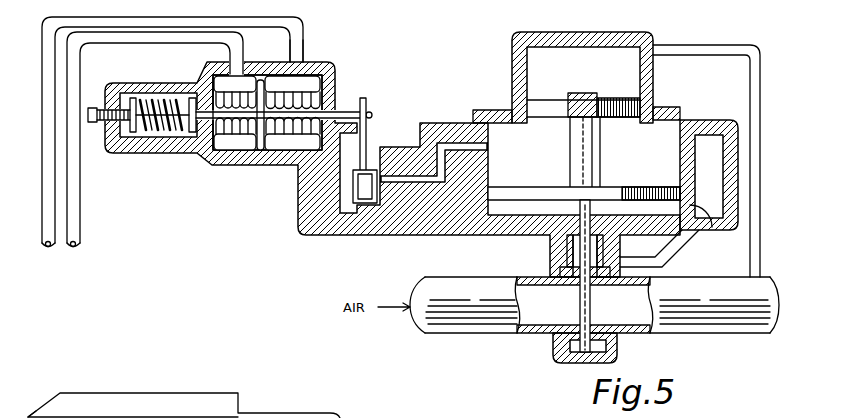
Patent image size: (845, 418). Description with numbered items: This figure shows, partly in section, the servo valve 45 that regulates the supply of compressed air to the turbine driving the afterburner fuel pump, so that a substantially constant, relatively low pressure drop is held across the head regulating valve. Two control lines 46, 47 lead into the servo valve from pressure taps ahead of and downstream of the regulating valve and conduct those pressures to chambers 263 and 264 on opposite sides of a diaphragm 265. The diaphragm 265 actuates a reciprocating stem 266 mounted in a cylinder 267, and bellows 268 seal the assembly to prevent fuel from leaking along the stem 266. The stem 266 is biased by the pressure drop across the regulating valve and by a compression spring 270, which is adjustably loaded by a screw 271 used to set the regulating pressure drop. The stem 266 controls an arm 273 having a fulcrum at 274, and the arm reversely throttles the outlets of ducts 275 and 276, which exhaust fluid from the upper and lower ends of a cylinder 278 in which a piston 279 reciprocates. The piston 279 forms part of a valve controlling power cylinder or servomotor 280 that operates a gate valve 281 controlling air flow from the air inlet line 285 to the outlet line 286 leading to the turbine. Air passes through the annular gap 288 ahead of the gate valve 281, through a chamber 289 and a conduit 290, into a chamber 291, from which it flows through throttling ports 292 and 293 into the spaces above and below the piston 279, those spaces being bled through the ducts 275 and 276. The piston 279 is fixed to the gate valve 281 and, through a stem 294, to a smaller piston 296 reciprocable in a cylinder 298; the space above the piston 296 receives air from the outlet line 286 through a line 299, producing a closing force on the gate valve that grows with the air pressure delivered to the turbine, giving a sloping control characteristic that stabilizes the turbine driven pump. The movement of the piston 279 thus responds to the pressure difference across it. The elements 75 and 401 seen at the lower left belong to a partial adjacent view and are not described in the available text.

The servo valve 45 is at (296, 236).
The control line 46 is at (48, 208).
The control line 47 is at (75, 195).
The plate 75 is at (160, 390).
The chamber 263 is at (337, 75).
The chamber 264 is at (258, 74).
The diaphragm 265 is at (258, 150).
The stem 266 is at (348, 111).
The cylinder 267 is at (305, 58).
The bellows 268 is at (212, 150).
The compression spring 270 is at (170, 94).
The screw 271 is at (110, 100).
The arm 273 is at (375, 165).
The fulcrum 274 is at (368, 118).
The duct 275 is at (392, 182).
The duct 276 is at (350, 215).
The cylinder 278 is at (503, 116).
The piston 279 is at (630, 186).
The servomotor 280 is at (684, 110).
The gate valve 281 is at (592, 292).
The air inlet line 285 is at (430, 332).
The outlet line 286 is at (722, 325).
The annular gap 288 is at (576, 290).
The chamber 289 is at (568, 258).
The conduit 290 is at (652, 258).
The chamber 291 is at (718, 126).
The throttling port 292 is at (684, 145).
The throttling port 293 is at (697, 222).
The stem 294 is at (575, 152).
The piston 296 is at (548, 98).
The cylinder 298 is at (535, 36).
The line 299 is at (698, 48).
The base 401 is at (24, 410).